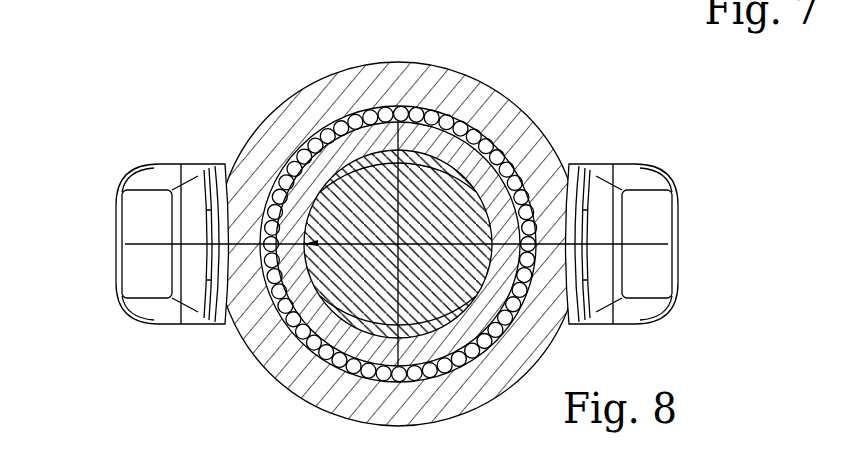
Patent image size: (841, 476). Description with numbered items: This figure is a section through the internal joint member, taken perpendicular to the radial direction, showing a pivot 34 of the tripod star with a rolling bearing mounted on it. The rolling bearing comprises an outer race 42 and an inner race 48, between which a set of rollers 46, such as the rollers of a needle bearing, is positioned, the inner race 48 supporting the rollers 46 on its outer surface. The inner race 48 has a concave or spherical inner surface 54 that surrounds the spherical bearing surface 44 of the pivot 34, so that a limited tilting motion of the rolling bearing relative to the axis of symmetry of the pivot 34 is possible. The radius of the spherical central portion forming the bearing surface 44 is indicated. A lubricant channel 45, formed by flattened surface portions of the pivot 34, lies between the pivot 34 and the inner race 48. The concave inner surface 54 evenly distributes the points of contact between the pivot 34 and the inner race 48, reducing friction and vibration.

The pivot 34 is at (422, 213).
The outer race 42 is at (510, 137).
The bearing surface 44 is at (540, 162).
The lubricant channel 45 is at (480, 228).
The rollers 46 is at (419, 112).
The inner race 48 is at (334, 184).
The rolling bearing inner surface 54 is at (321, 291).